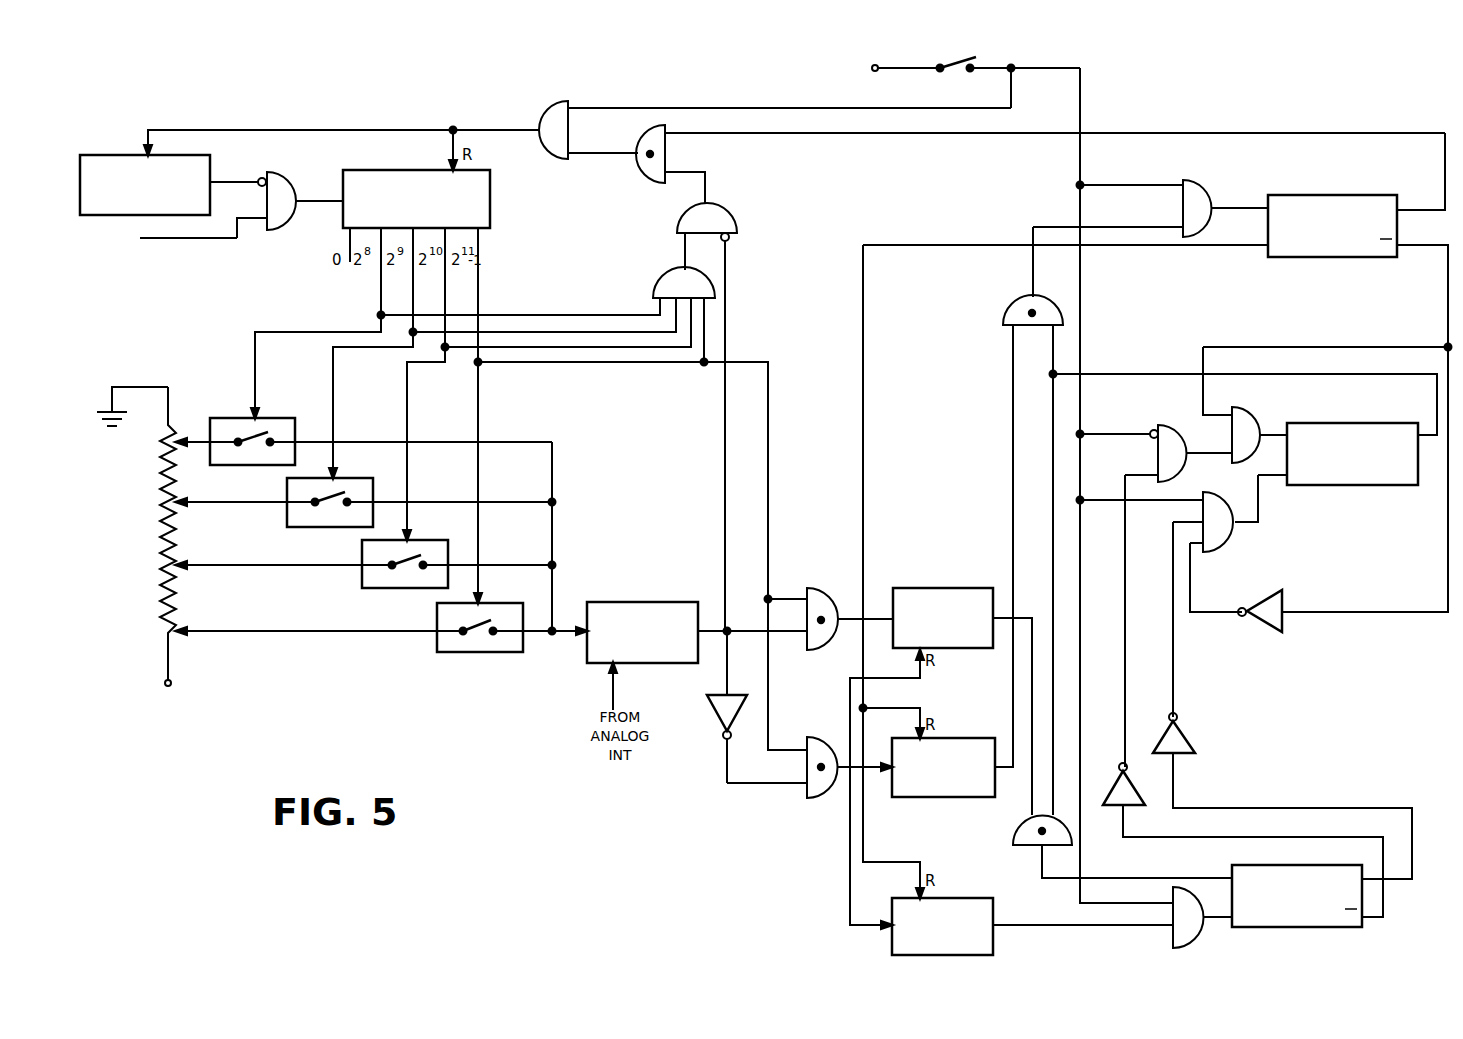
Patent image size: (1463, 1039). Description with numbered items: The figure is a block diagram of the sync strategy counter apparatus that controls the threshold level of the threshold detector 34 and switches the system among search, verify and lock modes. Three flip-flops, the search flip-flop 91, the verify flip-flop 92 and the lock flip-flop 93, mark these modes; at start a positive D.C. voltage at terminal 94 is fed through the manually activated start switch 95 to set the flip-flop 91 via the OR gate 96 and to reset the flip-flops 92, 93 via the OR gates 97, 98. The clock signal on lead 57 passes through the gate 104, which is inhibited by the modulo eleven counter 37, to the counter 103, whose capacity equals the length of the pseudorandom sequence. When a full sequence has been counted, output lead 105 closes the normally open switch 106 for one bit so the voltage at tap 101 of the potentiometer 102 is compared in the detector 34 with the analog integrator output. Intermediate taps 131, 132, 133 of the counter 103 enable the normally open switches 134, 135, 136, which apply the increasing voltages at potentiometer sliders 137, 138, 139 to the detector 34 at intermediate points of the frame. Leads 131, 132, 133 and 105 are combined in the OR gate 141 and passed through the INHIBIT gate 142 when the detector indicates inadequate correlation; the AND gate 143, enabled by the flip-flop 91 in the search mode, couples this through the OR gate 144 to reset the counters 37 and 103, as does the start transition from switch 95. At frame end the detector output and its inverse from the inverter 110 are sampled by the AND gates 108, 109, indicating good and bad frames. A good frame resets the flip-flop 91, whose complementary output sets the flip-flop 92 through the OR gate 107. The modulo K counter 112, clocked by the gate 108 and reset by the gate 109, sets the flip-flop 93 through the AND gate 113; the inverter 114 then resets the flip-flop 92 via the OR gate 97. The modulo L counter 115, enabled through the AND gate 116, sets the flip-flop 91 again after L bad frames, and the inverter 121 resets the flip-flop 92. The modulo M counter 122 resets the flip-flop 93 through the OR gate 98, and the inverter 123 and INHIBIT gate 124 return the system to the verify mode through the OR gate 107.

The modulo eleven counter 37 is at (103, 155).
The clock lead 57 is at (197, 240).
The gate 104 is at (281, 172).
The counter 103 is at (490, 203).
The output lead 105 is at (479, 257).
The intermediate tap 131 is at (381, 307).
The intermediate tap 132 is at (413, 290).
The intermediate tap 133 is at (446, 288).
The OR gate 144 is at (556, 104).
The AND gate 143 is at (642, 176).
The INHIBIT gate 142 is at (736, 218).
The OR gate 141 is at (658, 285).
The terminal 94 is at (878, 64).
The start switch 95 is at (960, 58).
The OR gate 96 is at (1204, 180).
The search flip-flop 91 is at (1351, 195).
The AND gate 116 is at (1010, 302).
The INHIBIT gate 124 is at (1172, 425).
The OR gate 107 is at (1251, 410).
The verify flip-flop 92 is at (1355, 423).
The OR gate 97 is at (1224, 541).
The inverter 121 is at (1284, 598).
The inverter 114 is at (1190, 740).
The inverter 123 is at (1135, 792).
The lock flip-flop 93 is at (1350, 928).
The OR gate 98 is at (1194, 935).
The AND gate 113 is at (1013, 832).
The modulo M counter 122 is at (976, 898).
The modulo K counter 112 is at (950, 588).
The modulo L counter 115 is at (961, 798).
The AND gate 108 is at (813, 588).
The AND gate 109 is at (822, 800).
The inverter 110 is at (716, 706).
The threshold detector 34 is at (629, 602).
The potentiometer slider 137 is at (192, 440).
The normally open switch 134 is at (281, 418).
The normally open switch 135 is at (362, 478).
The normally open switch 136 is at (445, 534).
The potentiometer slider 138 is at (237, 501).
The potentiometer slider 139 is at (262, 565).
The potentiometer 102 is at (162, 610).
The tap 101 is at (222, 632).
The normally open switch 106 is at (486, 656).